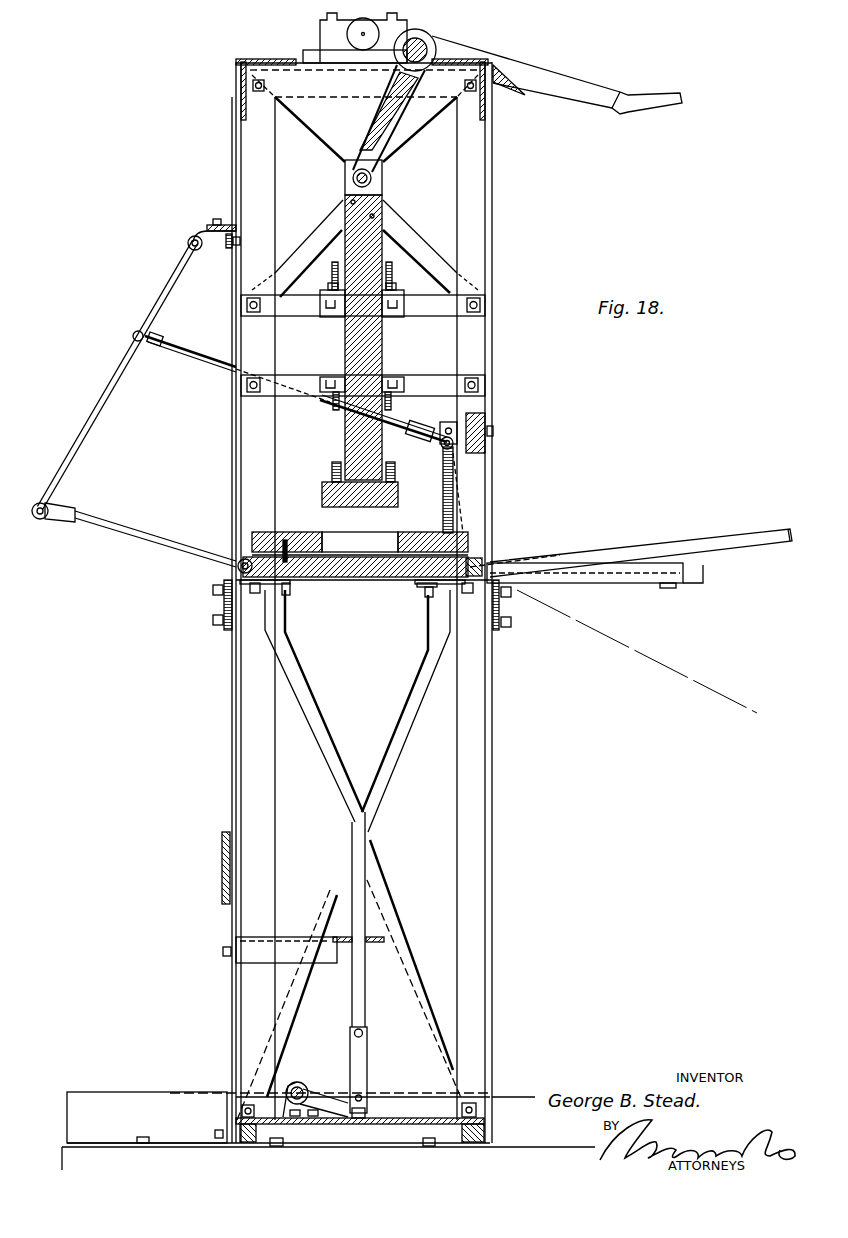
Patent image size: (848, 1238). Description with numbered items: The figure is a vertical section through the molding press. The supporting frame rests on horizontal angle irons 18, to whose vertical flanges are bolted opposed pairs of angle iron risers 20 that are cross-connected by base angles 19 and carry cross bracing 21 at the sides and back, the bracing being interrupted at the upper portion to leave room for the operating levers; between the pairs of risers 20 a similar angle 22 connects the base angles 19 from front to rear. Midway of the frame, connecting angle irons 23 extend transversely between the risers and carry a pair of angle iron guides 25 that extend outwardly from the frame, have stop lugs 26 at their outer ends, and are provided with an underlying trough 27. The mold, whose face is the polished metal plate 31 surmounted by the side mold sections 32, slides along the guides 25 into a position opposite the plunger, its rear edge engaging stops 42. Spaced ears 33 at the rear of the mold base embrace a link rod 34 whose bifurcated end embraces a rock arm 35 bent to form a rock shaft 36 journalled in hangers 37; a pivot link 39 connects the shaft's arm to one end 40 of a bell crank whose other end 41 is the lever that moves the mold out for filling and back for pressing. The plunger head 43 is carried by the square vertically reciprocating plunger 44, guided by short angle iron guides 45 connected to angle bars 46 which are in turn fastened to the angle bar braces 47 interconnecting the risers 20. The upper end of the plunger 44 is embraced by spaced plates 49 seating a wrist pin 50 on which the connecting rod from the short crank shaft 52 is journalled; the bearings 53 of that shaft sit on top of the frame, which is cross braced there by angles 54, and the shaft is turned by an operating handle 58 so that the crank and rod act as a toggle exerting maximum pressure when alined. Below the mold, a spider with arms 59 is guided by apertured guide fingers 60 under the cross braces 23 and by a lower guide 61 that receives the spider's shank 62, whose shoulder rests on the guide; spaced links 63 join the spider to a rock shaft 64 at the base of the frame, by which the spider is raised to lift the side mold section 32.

The angle irons 18 is at (182, 1101).
The base angles 19 is at (235, 1128).
The angle iron risers 20 is at (262, 218).
The cross bracing 21 is at (388, 172).
The angle 22 is at (427, 1090).
The connecting angle irons 23 is at (232, 598).
The angle iron guides 25 is at (560, 563).
The stop lugs 26 is at (705, 577).
The trough 27 is at (221, 902).
The metal plate 31 is at (367, 550).
The side mold sections 32 is at (433, 522).
The ears 33 is at (232, 545).
The link rod 34 is at (116, 527).
The rock arm 35 is at (98, 424).
The rock shaft 36 is at (192, 238).
The hangers 37 is at (212, 224).
The pivot link 39 is at (220, 366).
The bell crank lever end 40 is at (455, 507).
The operating lever 41 is at (633, 550).
The stops 42 is at (230, 571).
The plunger 43 is at (338, 506).
The vertically reciprocating plunger 44 is at (370, 363).
The guides 45 is at (337, 312).
The angle bars 46 is at (332, 275).
The angle bar braces 47 is at (444, 308).
The spaced plates 49 is at (345, 178).
The wrist pin 50 is at (366, 170).
The crank shaft 52 is at (428, 48).
The bearings 53 is at (320, 33).
The cross braces 54 is at (238, 108).
The operating handle 58 is at (556, 84).
The spider arms 59 is at (383, 770).
The guide fingers 60 is at (284, 590).
The lower guide 61 is at (297, 923).
The shank 62 is at (356, 876).
The links 63 is at (361, 1073).
The rock shaft 64 is at (302, 1086).